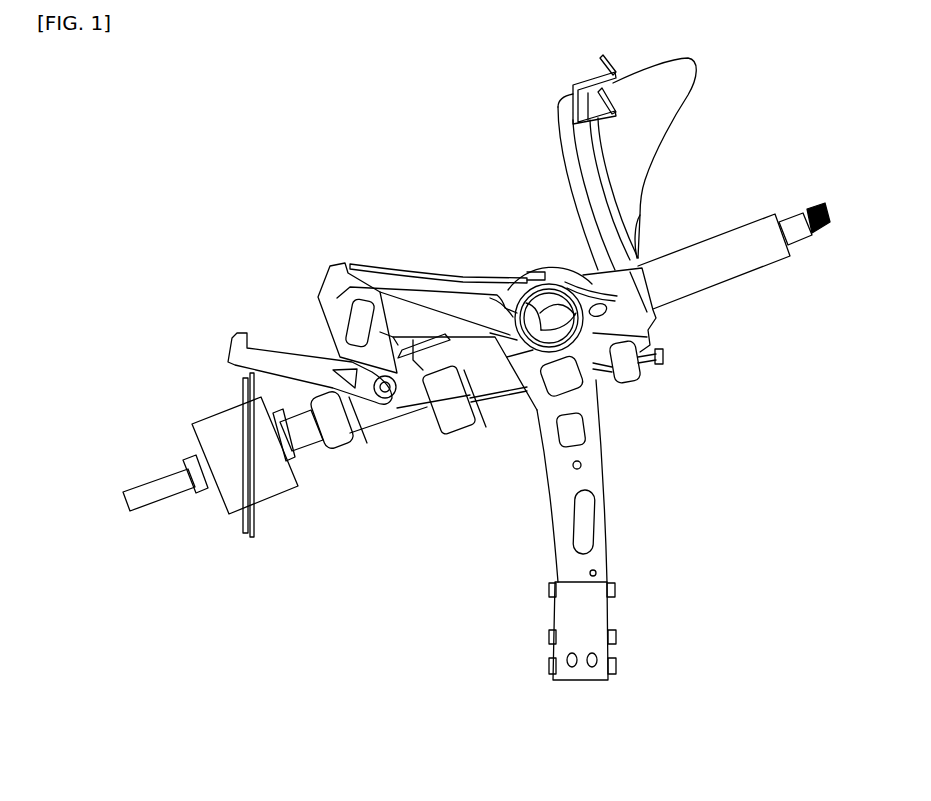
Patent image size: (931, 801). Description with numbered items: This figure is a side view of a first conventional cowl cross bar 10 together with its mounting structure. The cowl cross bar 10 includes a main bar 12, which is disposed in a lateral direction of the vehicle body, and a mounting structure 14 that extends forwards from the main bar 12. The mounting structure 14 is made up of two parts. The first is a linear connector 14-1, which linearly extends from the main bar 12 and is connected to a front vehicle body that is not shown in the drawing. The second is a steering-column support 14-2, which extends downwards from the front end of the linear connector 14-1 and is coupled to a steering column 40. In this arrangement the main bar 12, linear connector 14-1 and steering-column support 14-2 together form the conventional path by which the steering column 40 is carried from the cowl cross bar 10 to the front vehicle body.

The first conventional cowl cross bar 10 is at (500, 275).
The main bar 12 is at (558, 283).
The mounting structure 14 is at (353, 320).
The linear connector 14-1 is at (400, 275).
The steering-column support 14-2 is at (373, 367).
The steering column 40 is at (400, 410).